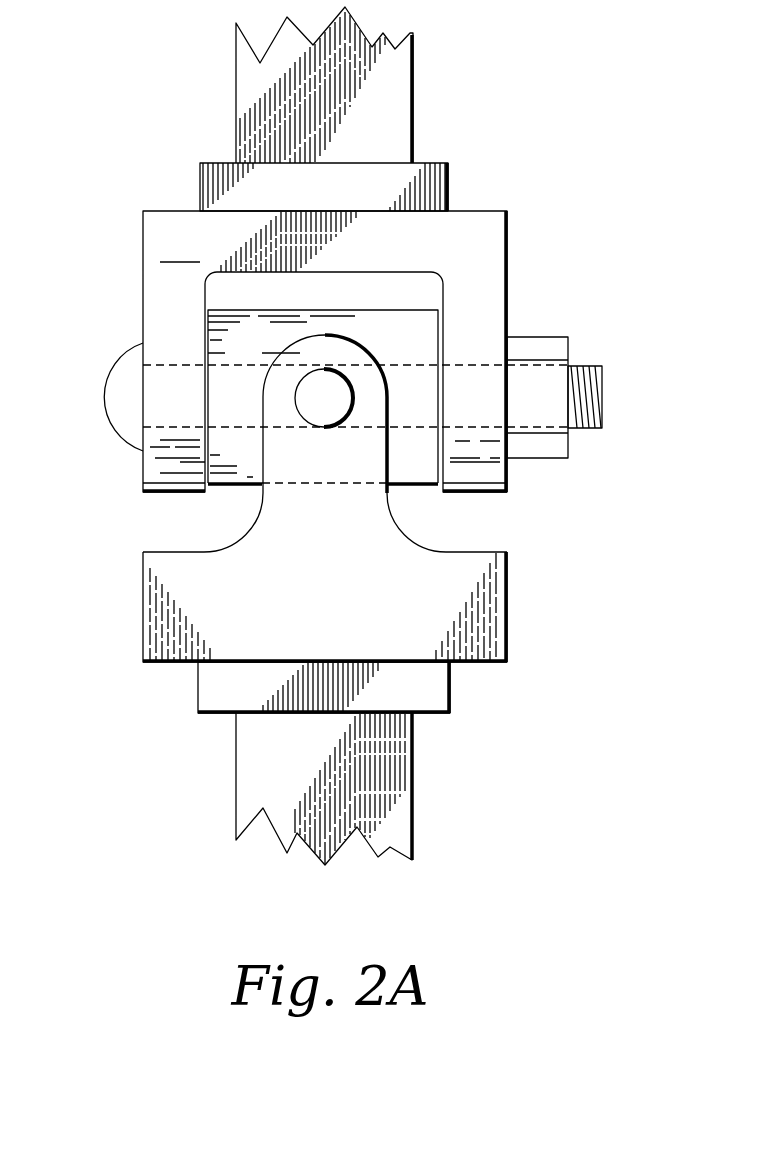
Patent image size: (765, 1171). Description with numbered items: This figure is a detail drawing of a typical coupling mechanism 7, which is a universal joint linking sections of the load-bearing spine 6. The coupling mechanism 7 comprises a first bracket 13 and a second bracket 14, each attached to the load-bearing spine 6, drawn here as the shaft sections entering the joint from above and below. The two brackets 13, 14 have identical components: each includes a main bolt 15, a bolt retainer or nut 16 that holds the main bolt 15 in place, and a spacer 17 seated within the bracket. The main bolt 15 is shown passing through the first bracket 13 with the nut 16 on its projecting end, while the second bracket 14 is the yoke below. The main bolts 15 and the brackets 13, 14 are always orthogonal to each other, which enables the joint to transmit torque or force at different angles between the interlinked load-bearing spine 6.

The load-bearing spine 6 is at (236, 82).
The coupling mechanism 7 is at (109, 161).
The first bracket 13 is at (490, 210).
The second bracket 14 is at (143, 617).
The main bolt 15 is at (295, 398).
The bolt retainer or nut 16 is at (550, 337).
The spacer 17 is at (230, 308).